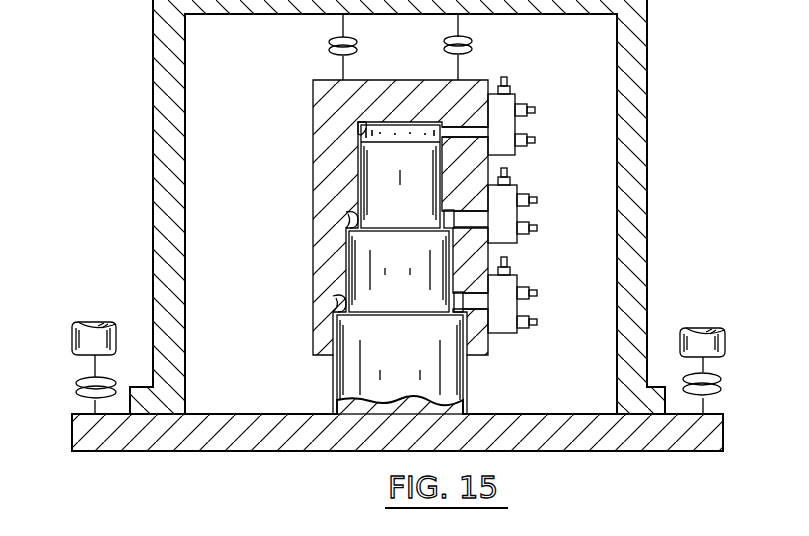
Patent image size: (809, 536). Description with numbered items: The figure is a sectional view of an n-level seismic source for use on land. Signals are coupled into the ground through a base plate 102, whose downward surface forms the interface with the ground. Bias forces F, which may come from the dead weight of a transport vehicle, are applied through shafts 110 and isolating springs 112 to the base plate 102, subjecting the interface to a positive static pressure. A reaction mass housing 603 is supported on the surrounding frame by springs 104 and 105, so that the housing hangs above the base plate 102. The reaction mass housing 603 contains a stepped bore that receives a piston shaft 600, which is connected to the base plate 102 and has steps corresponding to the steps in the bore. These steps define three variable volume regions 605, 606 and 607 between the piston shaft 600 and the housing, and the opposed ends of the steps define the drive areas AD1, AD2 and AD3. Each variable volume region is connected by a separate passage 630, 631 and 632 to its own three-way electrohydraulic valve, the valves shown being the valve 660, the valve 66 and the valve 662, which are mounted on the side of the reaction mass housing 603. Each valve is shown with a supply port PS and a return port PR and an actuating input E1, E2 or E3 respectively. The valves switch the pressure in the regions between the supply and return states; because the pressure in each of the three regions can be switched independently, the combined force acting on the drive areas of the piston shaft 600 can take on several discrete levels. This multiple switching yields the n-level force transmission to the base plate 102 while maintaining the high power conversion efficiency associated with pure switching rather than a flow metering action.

The base plate 102 is at (275, 452).
The spring 104 is at (470, 50).
The spring 105 is at (330, 47).
The shaft 110 is at (72, 338).
The isolating spring 112 is at (75, 388).
The piston shaft 600 is at (470, 395).
The reaction mass housing 603 is at (330, 357).
The variable volume region 605 is at (347, 280).
The variable volume region 606 is at (357, 190).
The variable volume region 607 is at (375, 126).
The passage 630 is at (470, 125).
The passage 631 is at (468, 210).
The passage 632 is at (477, 313).
The three-way electrohydraulic valve 660 is at (520, 97).
The solenoid valve 66 is at (520, 186).
The three-way electrohydraulic valve 662 is at (520, 278).
The valve solenoid E1 is at (508, 79).
The valve solenoid E2 is at (508, 172).
The valve solenoid E3 is at (506, 259).
The drive area AD1 is at (363, 128).
The drive area AD2 is at (347, 220).
The drive area AD3 is at (337, 303).
The supply pressure port PS is at (550, 205).
The return pressure port PR is at (550, 234).
The force F is at (91, 303).